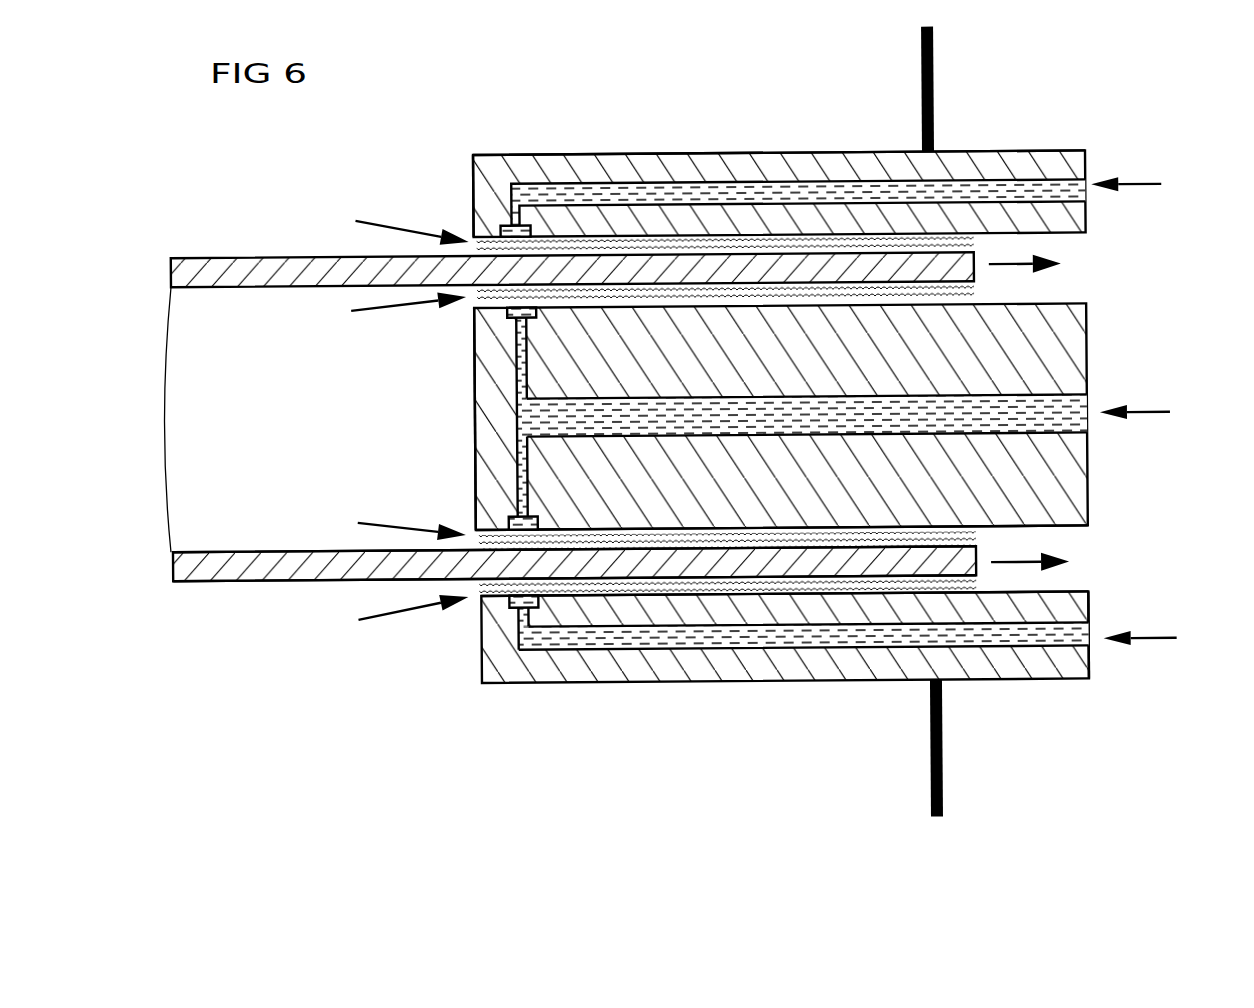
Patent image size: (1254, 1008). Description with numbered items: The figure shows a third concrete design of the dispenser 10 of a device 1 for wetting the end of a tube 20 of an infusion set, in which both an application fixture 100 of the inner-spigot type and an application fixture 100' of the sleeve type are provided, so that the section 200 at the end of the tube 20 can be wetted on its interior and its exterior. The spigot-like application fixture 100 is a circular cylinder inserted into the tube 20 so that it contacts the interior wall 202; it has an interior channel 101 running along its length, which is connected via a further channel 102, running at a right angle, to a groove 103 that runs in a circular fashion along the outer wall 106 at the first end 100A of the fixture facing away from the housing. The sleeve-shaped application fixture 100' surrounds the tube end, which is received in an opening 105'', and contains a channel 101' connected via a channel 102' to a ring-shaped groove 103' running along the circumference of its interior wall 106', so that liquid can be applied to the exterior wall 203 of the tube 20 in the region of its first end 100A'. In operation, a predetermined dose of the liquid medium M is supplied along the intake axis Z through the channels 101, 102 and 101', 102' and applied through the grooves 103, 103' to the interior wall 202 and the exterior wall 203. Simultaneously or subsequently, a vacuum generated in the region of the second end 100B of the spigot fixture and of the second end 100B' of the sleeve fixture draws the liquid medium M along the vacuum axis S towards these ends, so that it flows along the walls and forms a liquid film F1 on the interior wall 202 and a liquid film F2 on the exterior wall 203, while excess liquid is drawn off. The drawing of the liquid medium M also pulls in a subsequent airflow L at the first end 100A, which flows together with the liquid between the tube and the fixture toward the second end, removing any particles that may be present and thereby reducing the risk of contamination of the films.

The device 1 is at (1180, 696).
The dispenser 10 is at (674, 94).
The tube 20 is at (227, 566).
The application fixture 100 is at (780, 309).
The first end of the application fixture 100A is at (414, 419).
The first end of the application fixture 100A' is at (459, 165).
The second end of the application fixture 100B is at (826, 172).
The second end of the application fixture 100B' is at (1167, 574).
The application fixture 100' is at (785, 679).
The interior channel 101 is at (841, 385).
The channel 101' is at (804, 694).
The channel 102 is at (453, 413).
The channel 102' is at (471, 676).
The groove 103 is at (450, 502).
The groove 103' is at (467, 643).
The upper foot 105'' is at (450, 194).
The outer wall 106 is at (786, 625).
The interior wall 106' is at (785, 670).
The section of the tube 200 is at (853, 271).
The interior wall 202 is at (318, 548).
The exterior wall 203 is at (330, 584).
The liquid film F1 is at (574, 540).
The liquid film F2 is at (624, 586).
The airflow L is at (402, 423).
The liquid medium M is at (1010, 196).
The vacuum axis S is at (1062, 268).
The intake axis Z is at (1145, 192).